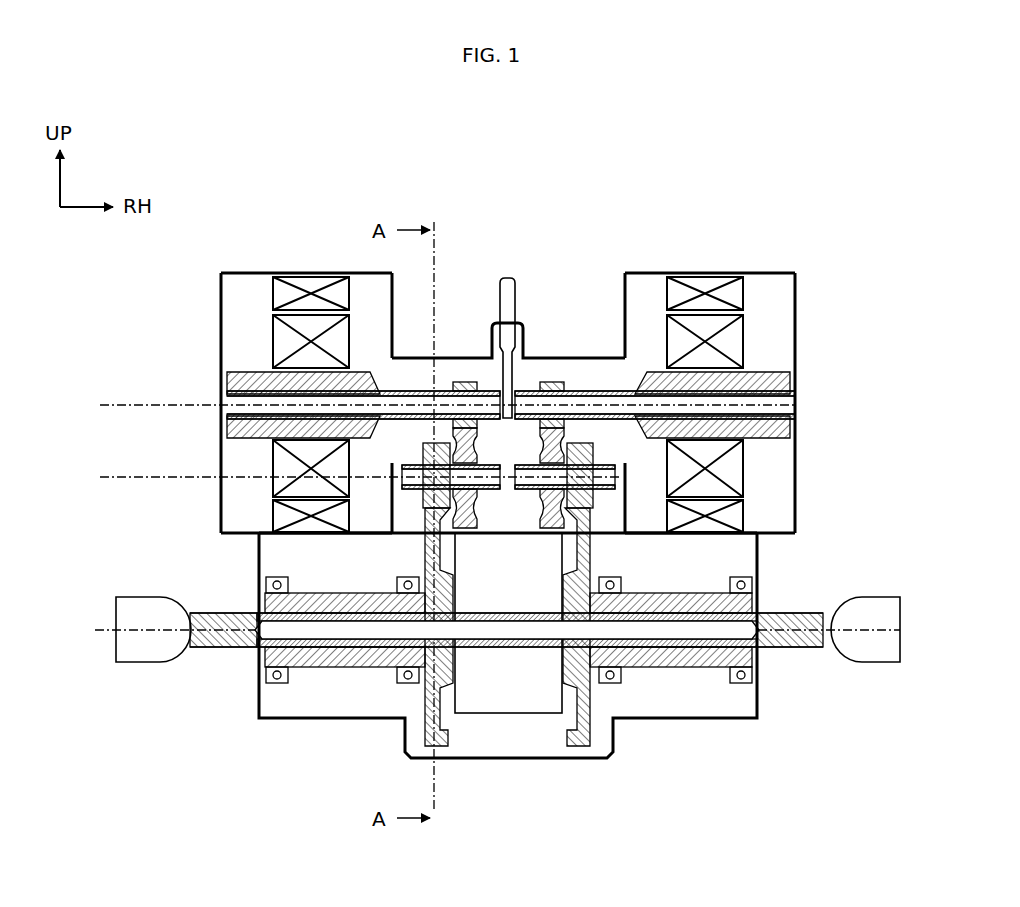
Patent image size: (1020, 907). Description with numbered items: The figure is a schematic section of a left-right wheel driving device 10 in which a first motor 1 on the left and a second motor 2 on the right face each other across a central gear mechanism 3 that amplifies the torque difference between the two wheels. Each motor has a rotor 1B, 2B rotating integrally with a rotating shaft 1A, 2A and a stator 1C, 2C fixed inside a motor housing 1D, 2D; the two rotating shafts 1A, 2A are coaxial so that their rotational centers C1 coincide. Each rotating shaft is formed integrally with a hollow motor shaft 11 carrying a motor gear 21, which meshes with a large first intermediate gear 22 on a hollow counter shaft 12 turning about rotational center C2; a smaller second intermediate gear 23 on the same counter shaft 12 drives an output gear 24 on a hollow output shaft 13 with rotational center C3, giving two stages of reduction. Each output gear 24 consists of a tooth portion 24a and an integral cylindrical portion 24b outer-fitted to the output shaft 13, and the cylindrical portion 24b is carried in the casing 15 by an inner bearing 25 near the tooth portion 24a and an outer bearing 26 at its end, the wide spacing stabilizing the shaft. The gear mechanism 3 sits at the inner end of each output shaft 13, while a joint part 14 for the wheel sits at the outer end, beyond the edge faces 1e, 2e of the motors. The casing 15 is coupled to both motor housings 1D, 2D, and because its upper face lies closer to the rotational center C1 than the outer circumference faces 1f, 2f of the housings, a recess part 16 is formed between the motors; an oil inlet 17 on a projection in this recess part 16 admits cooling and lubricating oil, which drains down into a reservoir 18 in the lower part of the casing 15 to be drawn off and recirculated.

The first motor 1 is at (268, 380).
The rotating shaft 1A is at (228, 384).
The rotor 1B is at (270, 458).
The stator 1C is at (270, 516).
The motor housing 1D is at (310, 272).
The edge face 1e is at (218, 346).
The outer circumference face 1f is at (254, 272).
The second motor 2 is at (746, 375).
The rotating shaft 2A is at (780, 383).
The rotor 2B is at (738, 472).
The stator 2C is at (738, 516).
The motor housing 2D is at (655, 272).
The edge face 2e is at (797, 349).
The outer circumference face 2f is at (760, 272).
The gear mechanism 3 is at (521, 671).
The driving device 10 is at (826, 233).
The motor shaft 11 is at (412, 390).
The counter shaft 12 is at (405, 490).
The output shaft 13 is at (298, 612).
The joint part 14 is at (148, 657).
The casing 15 is at (486, 760).
The recess part 16 is at (578, 292).
The inlet 17 is at (506, 277).
The reservoir 18 is at (515, 753).
The motor gear 21 is at (460, 381).
The first intermediate gear 22 is at (540, 445).
The second intermediate gear 23 is at (423, 447).
The output gear 24 is at (508, 653).
The tooth portion 24a is at (425, 720).
The cylindrical portion 24b is at (322, 660).
The bearing 25 is at (405, 684).
The bearing 26 is at (277, 684).
The rotational center C1 is at (428, 404).
The rotational center C2 is at (342, 476).
The rotational center C3 is at (481, 630).